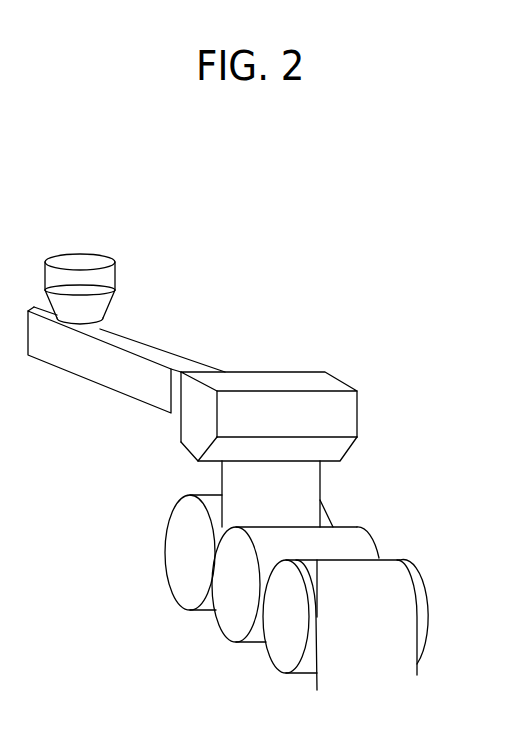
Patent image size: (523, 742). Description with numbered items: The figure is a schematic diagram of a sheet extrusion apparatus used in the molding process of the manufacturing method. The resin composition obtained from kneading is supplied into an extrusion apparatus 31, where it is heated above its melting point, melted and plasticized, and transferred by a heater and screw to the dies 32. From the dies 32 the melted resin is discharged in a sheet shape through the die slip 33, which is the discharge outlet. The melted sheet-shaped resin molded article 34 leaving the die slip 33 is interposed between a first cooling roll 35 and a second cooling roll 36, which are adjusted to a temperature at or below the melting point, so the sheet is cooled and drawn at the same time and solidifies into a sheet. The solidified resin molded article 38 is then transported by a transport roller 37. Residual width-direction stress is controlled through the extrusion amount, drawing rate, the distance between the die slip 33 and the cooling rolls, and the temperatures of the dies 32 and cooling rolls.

The extrusion apparatus 31 is at (143, 345).
The dies 32 is at (340, 405).
The die slip 33 is at (340, 458).
The melted sheet-shaped resin molded article 34 is at (300, 507).
The first cooling roll 35 is at (190, 535).
The second cooling roll 36 is at (347, 543).
The transport roller 37 is at (418, 580).
The resin molded article 38 is at (393, 645).